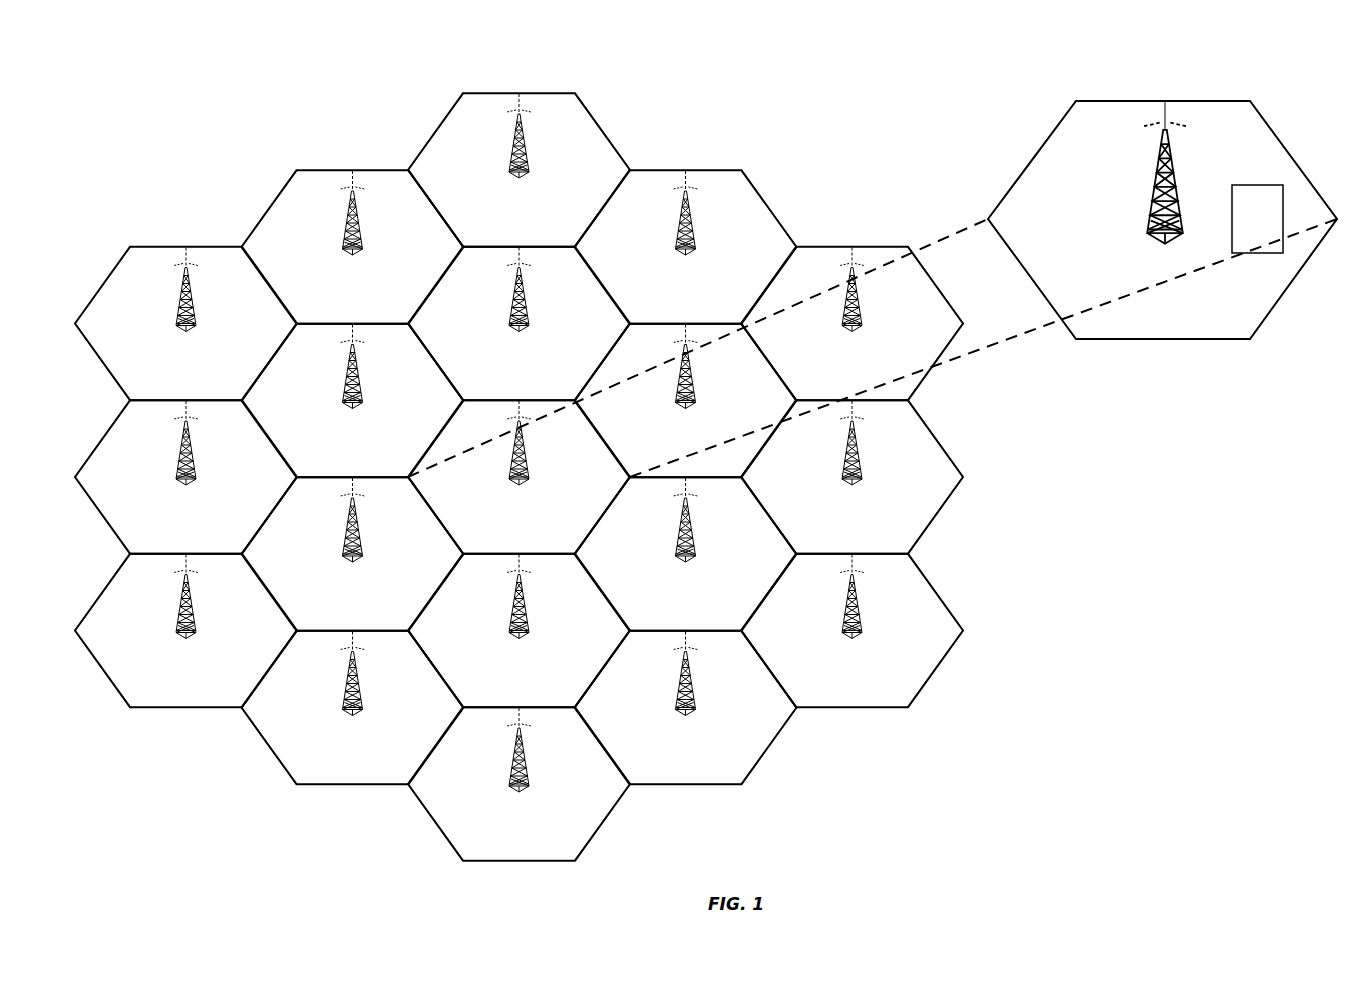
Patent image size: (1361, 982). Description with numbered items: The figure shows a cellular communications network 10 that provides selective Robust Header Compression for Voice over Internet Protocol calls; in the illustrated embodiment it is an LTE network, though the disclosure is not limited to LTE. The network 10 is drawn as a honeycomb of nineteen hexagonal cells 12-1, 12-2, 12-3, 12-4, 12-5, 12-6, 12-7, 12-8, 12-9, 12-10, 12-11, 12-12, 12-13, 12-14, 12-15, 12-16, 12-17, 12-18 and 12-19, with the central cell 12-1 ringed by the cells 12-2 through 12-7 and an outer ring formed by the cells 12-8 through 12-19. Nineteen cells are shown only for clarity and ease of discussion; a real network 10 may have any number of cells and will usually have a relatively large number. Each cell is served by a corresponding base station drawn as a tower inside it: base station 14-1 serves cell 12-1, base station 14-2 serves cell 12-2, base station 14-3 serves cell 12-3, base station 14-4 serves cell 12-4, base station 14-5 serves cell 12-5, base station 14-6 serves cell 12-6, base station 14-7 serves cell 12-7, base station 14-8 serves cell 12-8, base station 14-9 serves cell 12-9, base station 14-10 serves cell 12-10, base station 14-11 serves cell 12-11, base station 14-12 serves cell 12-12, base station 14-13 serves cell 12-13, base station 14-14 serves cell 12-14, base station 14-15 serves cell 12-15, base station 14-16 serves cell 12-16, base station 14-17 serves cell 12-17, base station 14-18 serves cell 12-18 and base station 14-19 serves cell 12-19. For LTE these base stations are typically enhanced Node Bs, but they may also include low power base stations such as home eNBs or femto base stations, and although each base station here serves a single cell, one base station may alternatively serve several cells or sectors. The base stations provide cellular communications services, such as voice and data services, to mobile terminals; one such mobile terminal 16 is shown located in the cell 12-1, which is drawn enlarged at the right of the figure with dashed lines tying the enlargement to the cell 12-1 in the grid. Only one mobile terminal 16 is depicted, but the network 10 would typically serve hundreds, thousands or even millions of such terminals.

The cellular communications network 10 is at (905, 58).
The cell 12-1 is at (500, 543).
The cell 12-2 is at (500, 390).
The cell 12-3 is at (666, 466).
The cell 12-4 is at (666, 620).
The cell 12-5 is at (500, 696).
The cell 12-6 is at (333, 620).
The cell 12-7 is at (333, 466).
The cell 12-8 is at (500, 236).
The cell 12-9 is at (666, 313).
The cell 12-10 is at (828, 390).
The cell 12-11 is at (828, 543).
The cell 12-12 is at (828, 696).
The cell 12-13 is at (661, 774).
The cell 12-14 is at (494, 850).
The cell 12-15 is at (328, 774).
The cell 12-16 is at (162, 696).
The cell 12-17 is at (162, 543).
The cell 12-18 is at (162, 390).
The cell 12-19 is at (328, 313).
The base station 14-1 is at (528, 469).
The base station 14-2 is at (528, 316).
The base station 14-3 is at (694, 392).
The base station 14-4 is at (694, 546).
The base station 14-5 is at (528, 622).
The base station 14-6 is at (362, 546).
The base station 14-7 is at (362, 392).
The base station 14-8 is at (528, 162).
The base station 14-9 is at (694, 239).
The base station 14-10 is at (861, 316).
The base station 14-11 is at (861, 469).
The base station 14-12 is at (861, 622).
The base station 14-13 is at (694, 700).
The base station 14-14 is at (528, 776).
The base station 14-15 is at (362, 700).
The base station 14-16 is at (195, 622).
The base station 14-17 is at (195, 469).
The base station 14-18 is at (195, 316).
The base station 14-19 is at (362, 239).
The mobile terminal 16 is at (1247, 242).